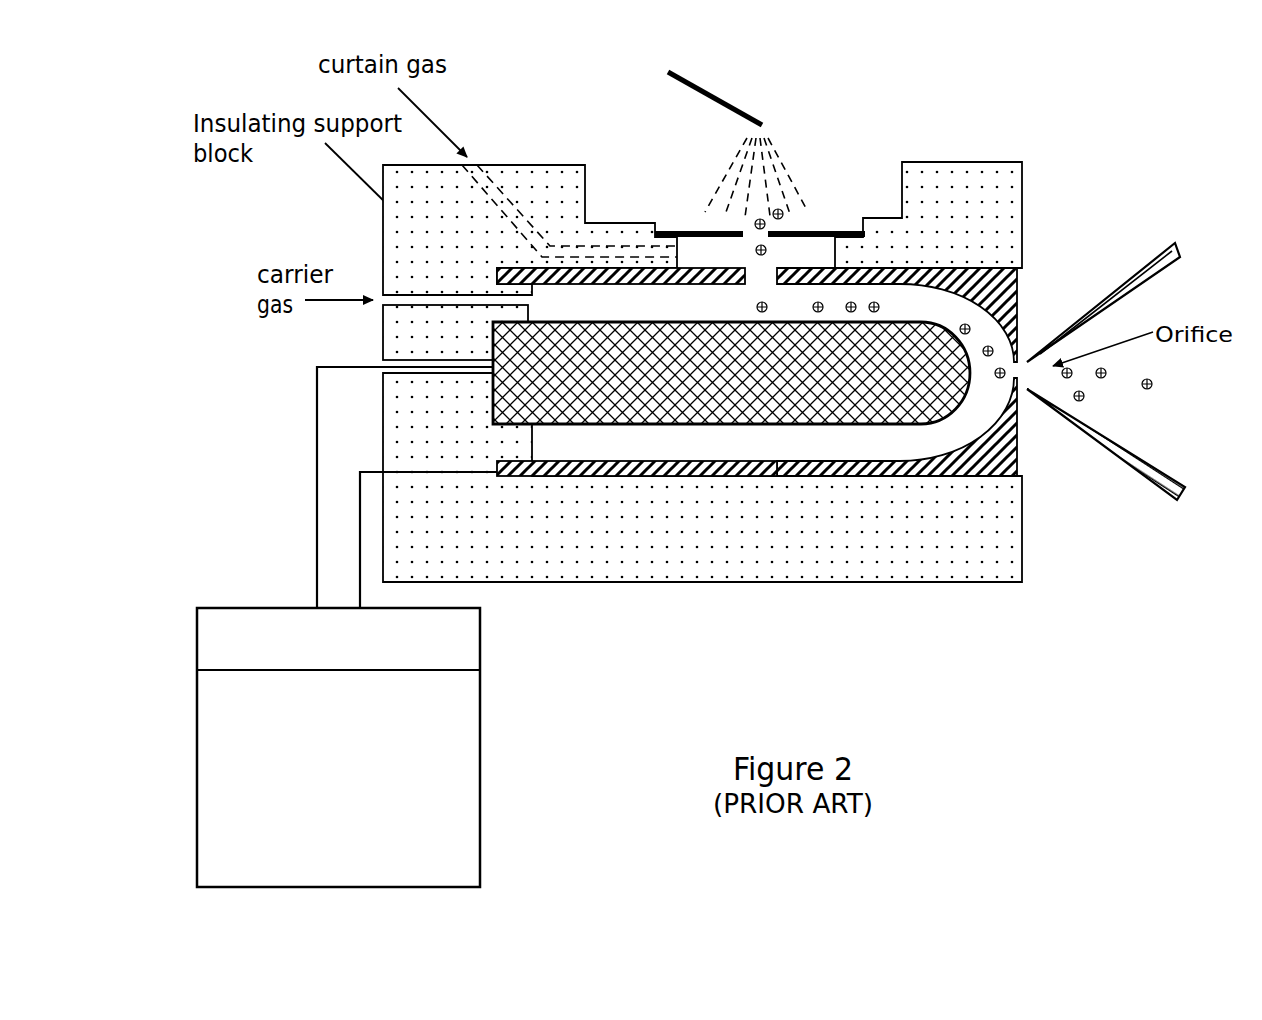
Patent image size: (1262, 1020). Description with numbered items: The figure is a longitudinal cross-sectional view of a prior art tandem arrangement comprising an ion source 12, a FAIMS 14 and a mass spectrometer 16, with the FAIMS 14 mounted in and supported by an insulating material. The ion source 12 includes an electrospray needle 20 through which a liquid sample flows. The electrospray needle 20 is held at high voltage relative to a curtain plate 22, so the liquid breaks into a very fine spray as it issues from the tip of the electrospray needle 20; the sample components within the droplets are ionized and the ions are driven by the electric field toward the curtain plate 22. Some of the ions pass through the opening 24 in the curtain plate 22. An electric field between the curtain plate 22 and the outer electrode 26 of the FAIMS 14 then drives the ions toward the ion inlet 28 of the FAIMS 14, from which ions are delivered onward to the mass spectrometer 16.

The ion source 12 is at (738, 53).
The FAIMS 14 is at (777, 650).
The mass spectrometer 16 is at (1116, 538).
The electrospray needle 20 is at (730, 103).
The curtain plate 22 is at (676, 231).
The opening 24 is at (757, 227).
The outer electrode 26 is at (850, 268).
The ion inlet 28 is at (767, 275).